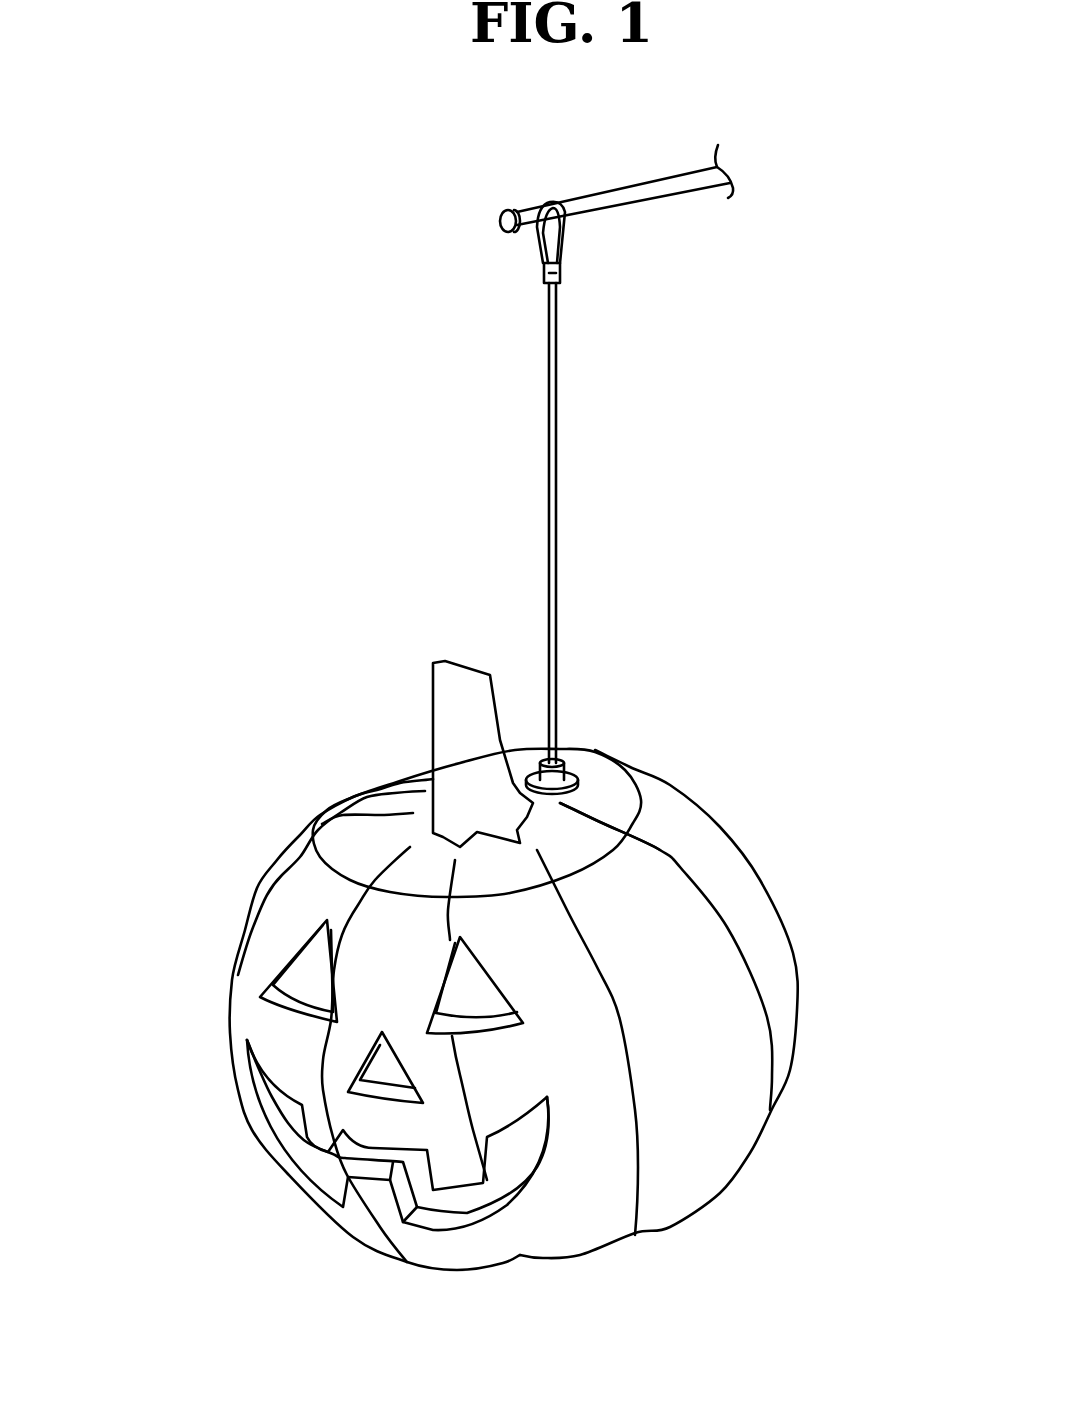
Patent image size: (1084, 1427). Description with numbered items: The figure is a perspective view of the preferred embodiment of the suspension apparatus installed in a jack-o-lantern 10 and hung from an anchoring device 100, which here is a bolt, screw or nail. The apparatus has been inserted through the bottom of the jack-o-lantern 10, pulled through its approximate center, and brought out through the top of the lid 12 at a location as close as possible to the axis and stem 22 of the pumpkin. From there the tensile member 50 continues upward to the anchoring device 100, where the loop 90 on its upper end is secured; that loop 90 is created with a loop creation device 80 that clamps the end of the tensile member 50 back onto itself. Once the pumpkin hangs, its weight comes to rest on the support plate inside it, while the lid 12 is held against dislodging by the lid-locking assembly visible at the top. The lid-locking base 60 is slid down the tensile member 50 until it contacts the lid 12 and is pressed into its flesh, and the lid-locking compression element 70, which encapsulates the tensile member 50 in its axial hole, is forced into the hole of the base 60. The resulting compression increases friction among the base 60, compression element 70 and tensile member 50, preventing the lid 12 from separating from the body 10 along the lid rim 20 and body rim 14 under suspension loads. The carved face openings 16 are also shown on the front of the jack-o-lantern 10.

The jack-o-lantern 10 is at (690, 997).
The lid 12 is at (378, 833).
The jack-o-lantern body rim 14 is at (597, 865).
The facial cut-outs 16 is at (388, 1072).
The lid rim 20 is at (340, 873).
The stem 22 is at (463, 733).
The tensile member 50 is at (549, 527).
The lid-locking base 60 is at (577, 772).
The lid-locking compression element 70 is at (560, 764).
The loop creation device 80 is at (560, 272).
The loop 90 is at (565, 222).
The anchoring device 100 is at (500, 218).